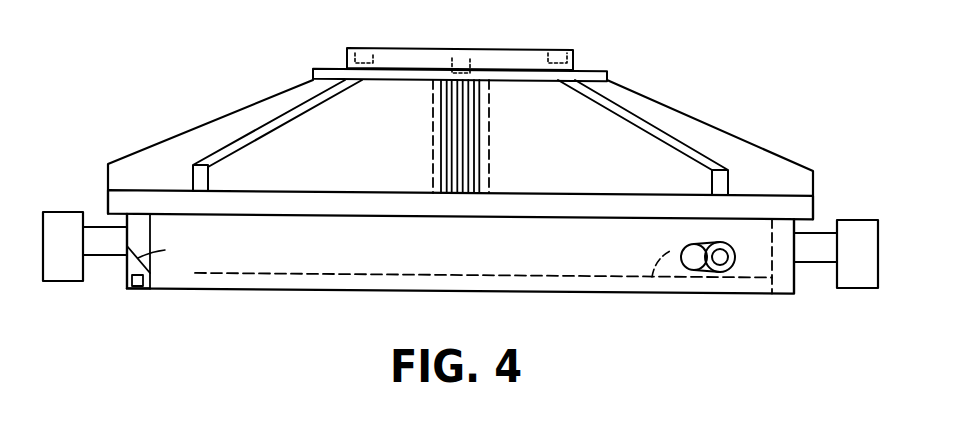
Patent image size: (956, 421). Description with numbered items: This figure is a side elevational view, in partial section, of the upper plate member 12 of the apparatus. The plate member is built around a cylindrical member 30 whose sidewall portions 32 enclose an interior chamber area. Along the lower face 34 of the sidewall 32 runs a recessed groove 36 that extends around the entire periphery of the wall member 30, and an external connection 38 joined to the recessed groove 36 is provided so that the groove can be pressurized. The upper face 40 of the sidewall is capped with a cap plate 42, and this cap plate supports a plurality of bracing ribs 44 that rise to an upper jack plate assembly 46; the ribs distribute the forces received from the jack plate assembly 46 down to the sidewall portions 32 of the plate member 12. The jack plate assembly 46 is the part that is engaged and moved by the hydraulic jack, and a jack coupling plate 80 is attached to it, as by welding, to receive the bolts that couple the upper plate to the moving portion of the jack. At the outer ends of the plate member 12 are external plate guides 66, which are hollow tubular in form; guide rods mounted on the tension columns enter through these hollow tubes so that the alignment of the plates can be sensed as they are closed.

The upper plate member 12 is at (254, 78).
The cylindrical member 30 is at (462, 260).
The sidewall portions 32 is at (130, 253).
The lower face 34 is at (128, 290).
The recessed groove 36 is at (138, 290).
The external connection 38 is at (713, 243).
The upper face 40 is at (133, 216).
The cap plate 42 is at (307, 197).
The bracing ribs 44 is at (192, 129).
The jack plate assembly 46 is at (337, 69).
The plate guides 66 is at (63, 212).
The jack coupling plate 80 is at (405, 49).